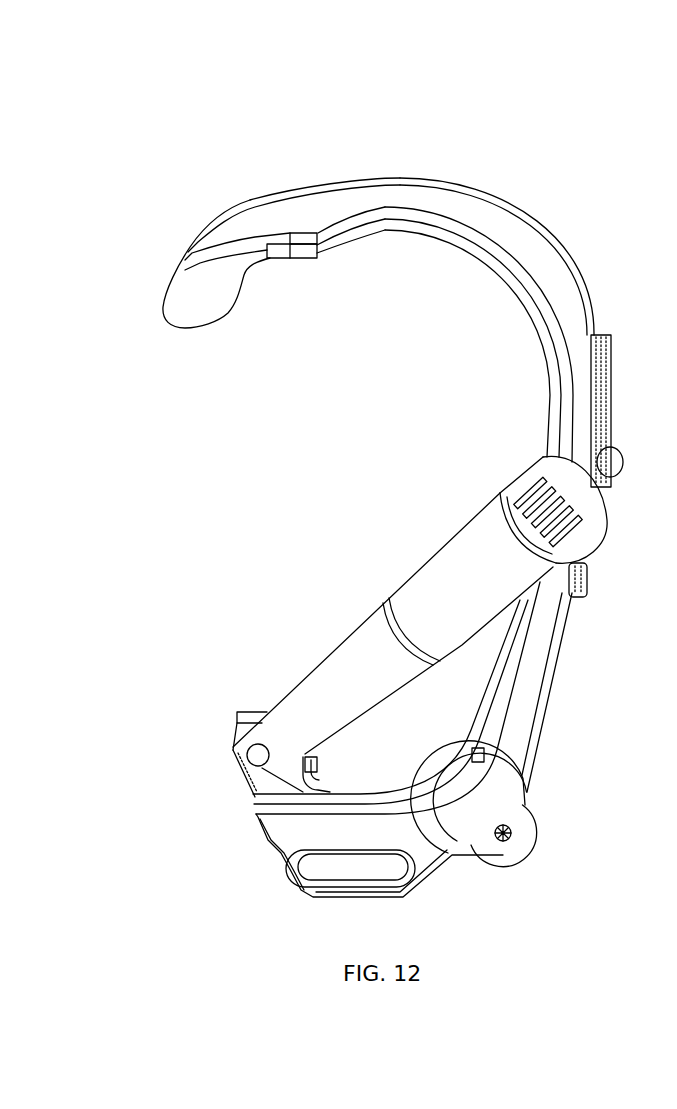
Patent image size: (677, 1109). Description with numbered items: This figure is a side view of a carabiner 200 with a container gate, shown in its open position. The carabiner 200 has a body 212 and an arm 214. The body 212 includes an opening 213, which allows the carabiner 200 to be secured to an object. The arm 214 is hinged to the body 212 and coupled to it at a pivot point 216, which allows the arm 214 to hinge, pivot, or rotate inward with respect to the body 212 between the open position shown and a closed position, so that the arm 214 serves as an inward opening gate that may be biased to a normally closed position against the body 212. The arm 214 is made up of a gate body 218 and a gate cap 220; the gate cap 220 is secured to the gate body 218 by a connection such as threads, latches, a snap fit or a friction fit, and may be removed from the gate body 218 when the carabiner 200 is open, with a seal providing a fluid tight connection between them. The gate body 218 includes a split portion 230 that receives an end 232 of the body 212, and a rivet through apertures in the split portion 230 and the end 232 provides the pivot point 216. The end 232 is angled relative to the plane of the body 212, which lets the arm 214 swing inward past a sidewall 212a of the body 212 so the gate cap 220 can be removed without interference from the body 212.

The carabiner 200 is at (218, 146).
The body 212 is at (597, 209).
The sidewall 212a is at (583, 332).
The gate cap 220 is at (517, 475).
The arm 214 is at (377, 554).
The gate body 218 is at (318, 660).
The end 232 is at (227, 708).
The pivot point 216 is at (228, 756).
The split portion 230 is at (234, 783).
The opening 213 is at (321, 873).